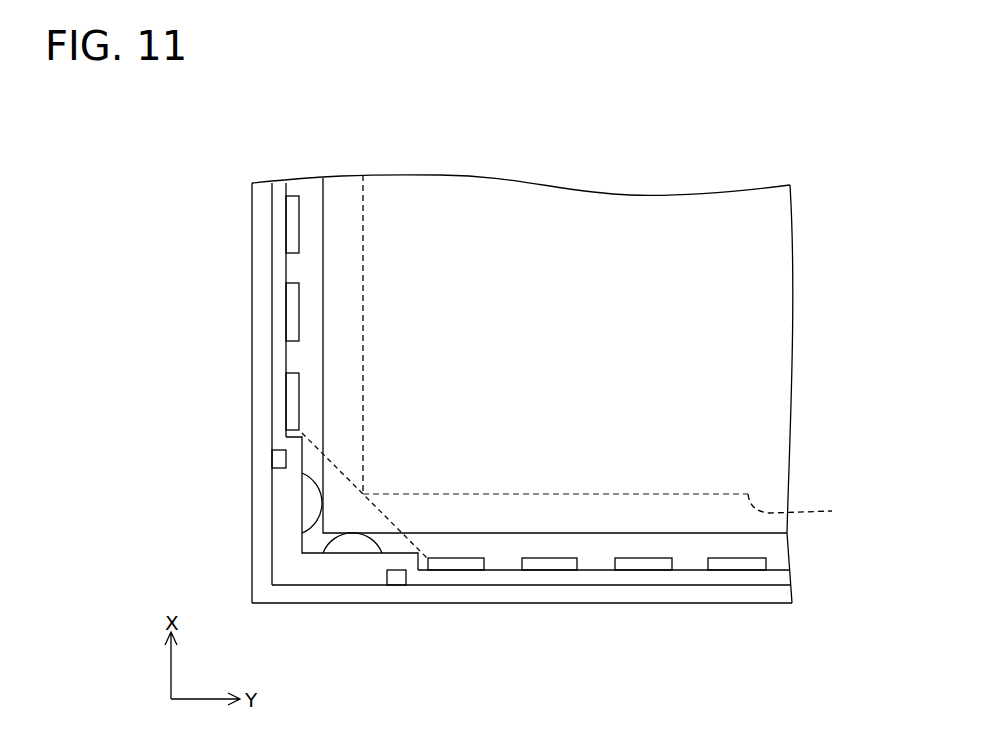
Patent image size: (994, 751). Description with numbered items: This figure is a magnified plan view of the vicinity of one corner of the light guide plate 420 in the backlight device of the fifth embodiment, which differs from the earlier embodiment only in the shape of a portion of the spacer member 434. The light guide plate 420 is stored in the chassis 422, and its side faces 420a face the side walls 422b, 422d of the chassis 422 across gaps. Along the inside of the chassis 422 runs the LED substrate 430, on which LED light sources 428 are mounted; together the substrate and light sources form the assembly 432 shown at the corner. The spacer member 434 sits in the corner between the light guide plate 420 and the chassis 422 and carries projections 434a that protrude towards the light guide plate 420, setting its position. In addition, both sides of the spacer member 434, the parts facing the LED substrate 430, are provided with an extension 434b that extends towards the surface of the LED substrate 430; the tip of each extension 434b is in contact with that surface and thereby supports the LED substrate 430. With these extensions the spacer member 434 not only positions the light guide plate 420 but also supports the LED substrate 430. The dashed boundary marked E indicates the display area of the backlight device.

The light guide plate 420 is at (485, 393).
The side face of light guide plate 420a is at (323, 348).
The chassis 422 is at (474, 433).
The side wall of chassis 422b is at (435, 592).
The side wall of chassis 422d is at (263, 402).
The LED light source 428 is at (294, 225).
The LED substrate 430 is at (280, 262).
The buffer member (428 and 430) 432 is at (468, 440).
The spacer member 434 is at (298, 559).
The projection of spacer member 434a is at (313, 505).
The extension of spacer member 434b is at (297, 455).
The display area E is at (799, 510).